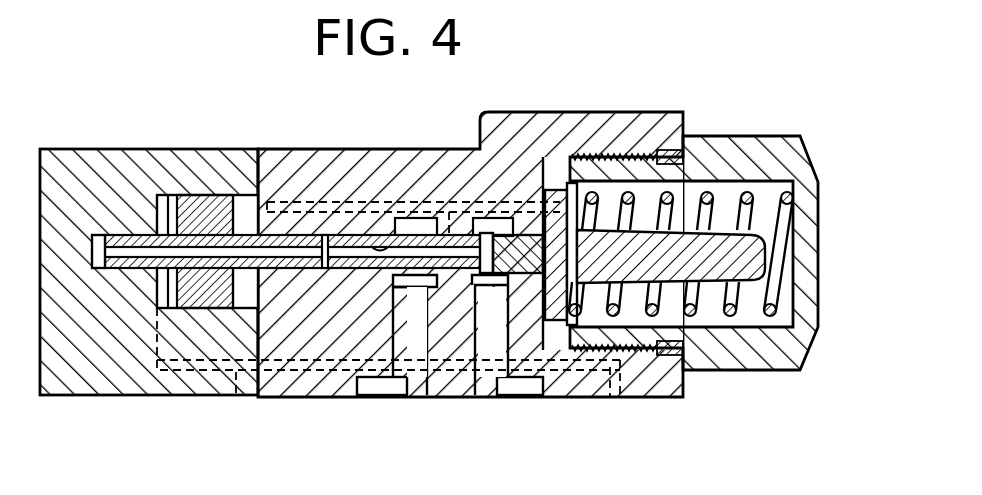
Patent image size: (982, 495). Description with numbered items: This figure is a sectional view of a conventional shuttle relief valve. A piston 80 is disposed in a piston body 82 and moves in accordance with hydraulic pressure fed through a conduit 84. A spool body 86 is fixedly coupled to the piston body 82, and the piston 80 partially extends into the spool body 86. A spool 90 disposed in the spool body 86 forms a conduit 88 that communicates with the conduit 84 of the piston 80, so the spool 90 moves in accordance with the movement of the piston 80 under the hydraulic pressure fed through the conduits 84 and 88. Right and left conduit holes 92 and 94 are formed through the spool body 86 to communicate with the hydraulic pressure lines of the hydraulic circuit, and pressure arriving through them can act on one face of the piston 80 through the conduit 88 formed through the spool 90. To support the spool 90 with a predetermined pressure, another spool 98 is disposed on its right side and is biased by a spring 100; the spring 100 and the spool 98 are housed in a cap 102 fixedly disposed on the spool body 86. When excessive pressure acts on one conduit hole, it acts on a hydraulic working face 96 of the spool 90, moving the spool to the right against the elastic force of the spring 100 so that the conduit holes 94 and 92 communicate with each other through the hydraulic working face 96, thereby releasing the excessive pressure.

The piston 80 is at (180, 191).
The piston body 82 is at (93, 396).
The conduit 84 is at (217, 249).
The spool body 86 is at (482, 126).
The conduit 88 is at (380, 250).
The spool 90 is at (334, 237).
The conduit hole 92 is at (496, 358).
The conduit hole 94 is at (420, 288).
The hydraulic working face 96 is at (357, 366).
The spool 98 is at (818, 288).
The spring 100 is at (800, 187).
The cap 102 is at (724, 136).